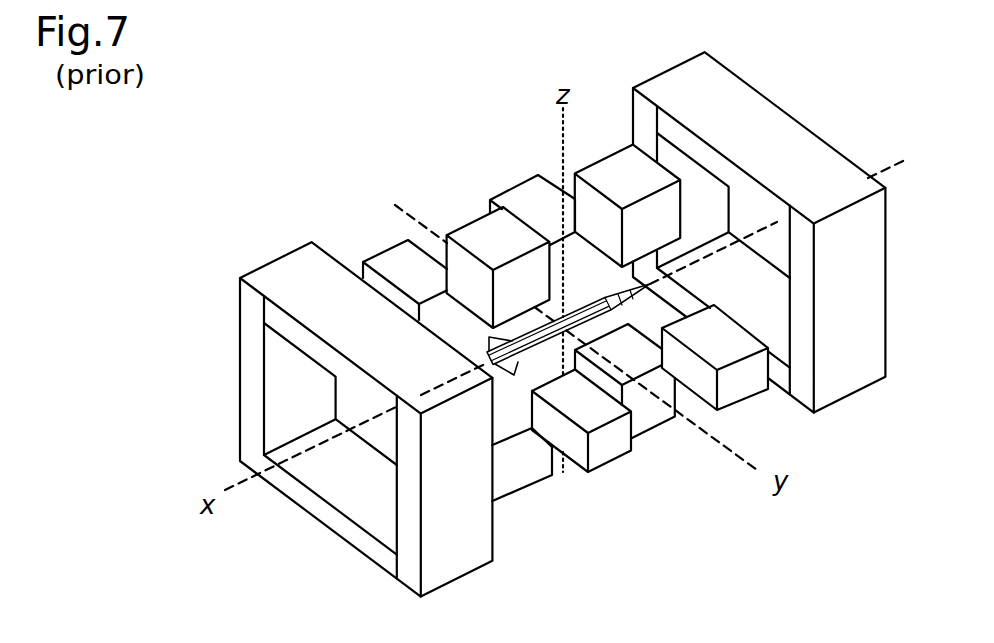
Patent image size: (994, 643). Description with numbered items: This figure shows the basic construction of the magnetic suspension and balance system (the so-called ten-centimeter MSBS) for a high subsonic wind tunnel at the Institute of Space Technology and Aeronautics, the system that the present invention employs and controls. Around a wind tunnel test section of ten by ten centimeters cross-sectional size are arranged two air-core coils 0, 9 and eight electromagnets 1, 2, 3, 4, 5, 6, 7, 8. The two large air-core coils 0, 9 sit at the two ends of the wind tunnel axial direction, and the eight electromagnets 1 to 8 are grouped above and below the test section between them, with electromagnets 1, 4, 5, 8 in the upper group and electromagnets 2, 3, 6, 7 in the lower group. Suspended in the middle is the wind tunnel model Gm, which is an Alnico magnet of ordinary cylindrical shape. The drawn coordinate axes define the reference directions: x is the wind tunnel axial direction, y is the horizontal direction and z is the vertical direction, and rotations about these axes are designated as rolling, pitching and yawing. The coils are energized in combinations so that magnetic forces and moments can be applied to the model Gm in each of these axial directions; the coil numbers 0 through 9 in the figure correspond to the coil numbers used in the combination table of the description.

The air-core coil 0 is at (759, 232).
The electromagnet 1 is at (627, 206).
The electromagnet 2 is at (715, 357).
The electromagnet 3 is at (625, 381).
The electromagnet 4 is at (532, 210).
The electromagnet 5 is at (498, 267).
The electromagnet 6 is at (581, 421).
The electromagnet 7 is at (522, 464).
The electromagnet 8 is at (405, 280).
The air-core coil 9 is at (366, 419).
The wind tunnel model Gm is at (562, 332).